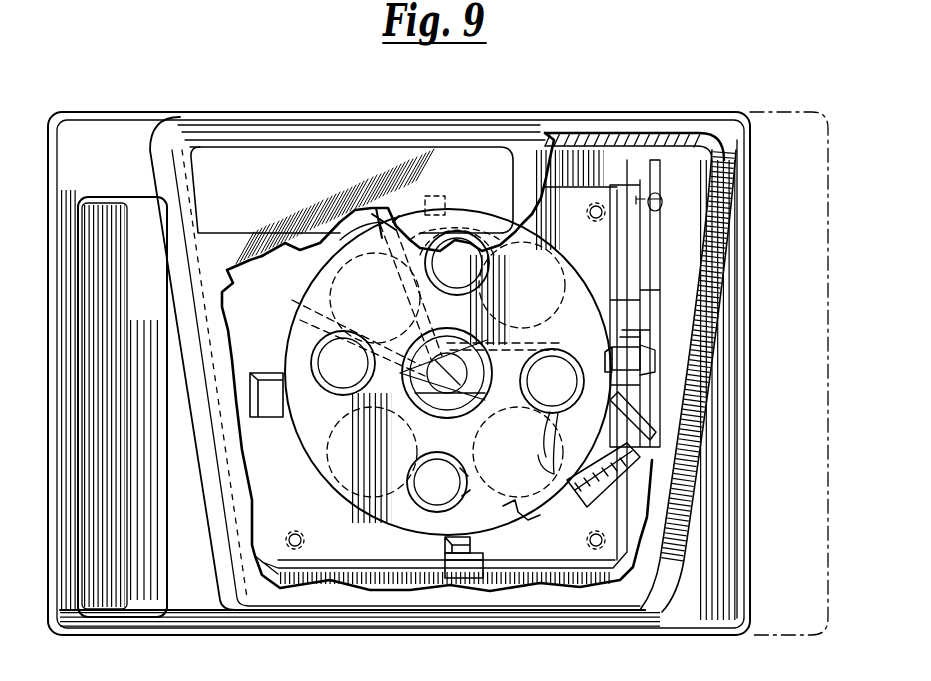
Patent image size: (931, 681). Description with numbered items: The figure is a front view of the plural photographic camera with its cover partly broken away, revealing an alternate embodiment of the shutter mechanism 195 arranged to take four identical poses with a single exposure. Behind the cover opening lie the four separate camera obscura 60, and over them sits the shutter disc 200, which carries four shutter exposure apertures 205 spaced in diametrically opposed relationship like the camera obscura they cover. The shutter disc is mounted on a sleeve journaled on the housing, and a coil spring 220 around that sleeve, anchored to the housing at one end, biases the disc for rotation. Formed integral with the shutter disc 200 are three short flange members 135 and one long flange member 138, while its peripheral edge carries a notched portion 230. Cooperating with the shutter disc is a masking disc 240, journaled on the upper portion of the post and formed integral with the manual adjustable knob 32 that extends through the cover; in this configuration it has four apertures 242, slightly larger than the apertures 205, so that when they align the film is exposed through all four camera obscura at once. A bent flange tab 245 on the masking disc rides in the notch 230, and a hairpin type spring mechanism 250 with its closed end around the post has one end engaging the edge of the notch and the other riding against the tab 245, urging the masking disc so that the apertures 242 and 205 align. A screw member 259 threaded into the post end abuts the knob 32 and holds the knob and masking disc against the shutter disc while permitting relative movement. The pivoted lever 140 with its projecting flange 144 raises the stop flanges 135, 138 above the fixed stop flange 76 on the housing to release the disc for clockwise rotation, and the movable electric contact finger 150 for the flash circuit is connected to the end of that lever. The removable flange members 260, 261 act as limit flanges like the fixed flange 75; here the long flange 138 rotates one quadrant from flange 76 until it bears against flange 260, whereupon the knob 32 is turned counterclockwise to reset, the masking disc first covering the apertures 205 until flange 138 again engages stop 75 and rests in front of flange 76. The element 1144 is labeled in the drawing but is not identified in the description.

The manual adjustable knob 32 is at (412, 333).
The camera obscura 60 is at (327, 489).
The fixed stop flange 75 is at (640, 343).
The fixed stop flange 76 is at (637, 388).
The short flange member 135 is at (447, 193).
The long flange member 138 is at (650, 364).
The pivoted lever 140 is at (655, 261).
The projecting flange 144 is at (642, 354).
The movable electric contact finger 150 is at (622, 433).
The shutter mechanism 195 is at (383, 537).
The shutter disc 200 is at (527, 523).
The shutter exposure aperture 205 is at (461, 464).
The coil spring 220 is at (522, 285).
The notched portion 230 is at (262, 250).
The masking disc 240 is at (373, 528).
The masking disc aperture 242 is at (468, 490).
The bent flange tab 245 is at (358, 233).
The hairpin type spring mechanism 250 is at (388, 216).
The screw member 259 is at (474, 419).
The removable flange member 260 is at (470, 578).
The removable flange member 261 is at (252, 386).
The belt path 1144 is at (620, 350).